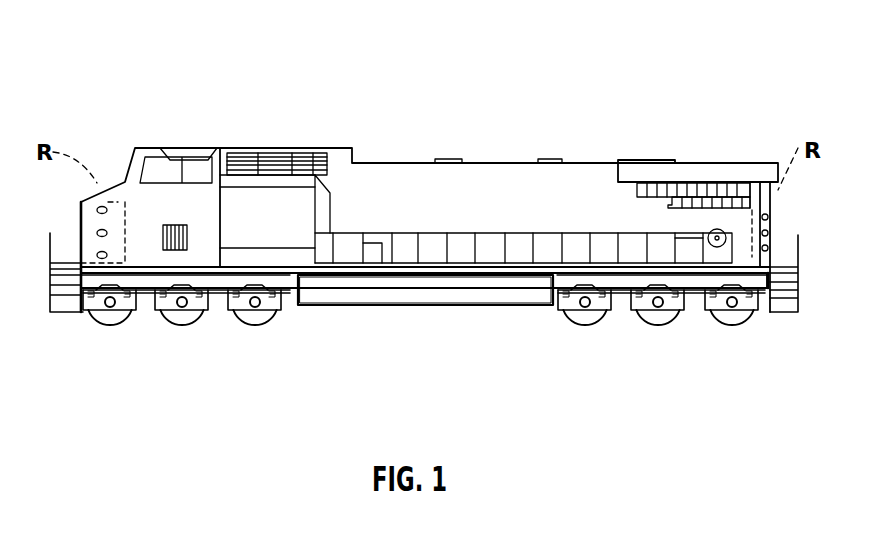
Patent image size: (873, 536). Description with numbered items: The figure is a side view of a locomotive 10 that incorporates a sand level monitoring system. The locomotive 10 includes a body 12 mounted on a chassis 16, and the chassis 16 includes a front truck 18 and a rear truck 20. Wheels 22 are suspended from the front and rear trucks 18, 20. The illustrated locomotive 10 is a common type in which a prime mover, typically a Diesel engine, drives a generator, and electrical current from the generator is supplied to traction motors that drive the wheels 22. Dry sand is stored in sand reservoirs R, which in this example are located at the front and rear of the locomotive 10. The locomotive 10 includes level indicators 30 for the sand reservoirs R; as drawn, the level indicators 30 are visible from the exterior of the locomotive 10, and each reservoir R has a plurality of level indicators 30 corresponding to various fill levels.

The locomotive 10 is at (490, 98).
The body 12 is at (447, 210).
The chassis 16 is at (470, 287).
The front truck 18 is at (88, 317).
The rear truck 20 is at (606, 372).
The wheels 22 is at (252, 318).
The level indicator 30 is at (97, 255).